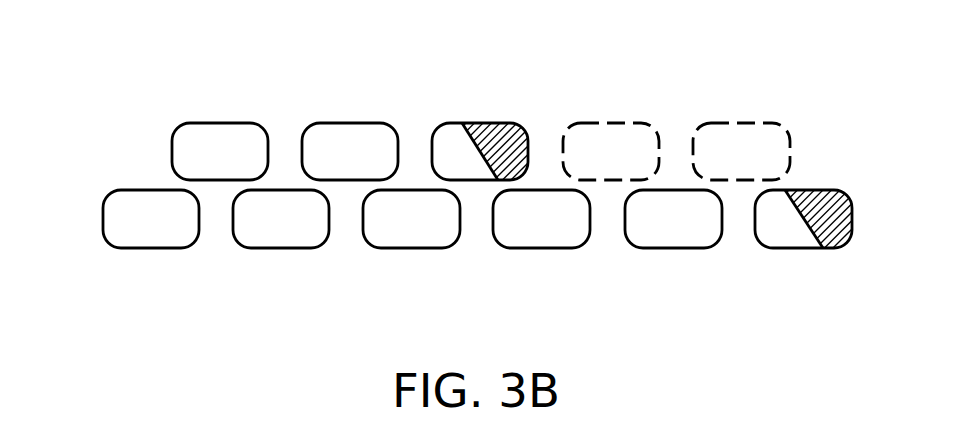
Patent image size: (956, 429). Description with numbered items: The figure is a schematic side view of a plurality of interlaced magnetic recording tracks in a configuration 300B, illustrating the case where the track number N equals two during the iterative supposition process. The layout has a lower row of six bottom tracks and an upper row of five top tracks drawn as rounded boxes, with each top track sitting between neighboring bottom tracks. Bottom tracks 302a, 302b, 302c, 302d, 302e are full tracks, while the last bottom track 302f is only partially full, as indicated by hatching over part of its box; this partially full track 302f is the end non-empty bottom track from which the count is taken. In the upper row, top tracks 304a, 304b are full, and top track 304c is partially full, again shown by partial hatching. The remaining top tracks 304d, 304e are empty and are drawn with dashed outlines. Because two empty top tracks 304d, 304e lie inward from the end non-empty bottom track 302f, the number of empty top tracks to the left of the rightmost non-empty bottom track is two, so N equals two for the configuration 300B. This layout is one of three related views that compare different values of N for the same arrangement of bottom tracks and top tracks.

The configuration 300B is at (126, 56).
The bottom track 302a is at (123, 248).
The bottom track 302b is at (260, 248).
The bottom track 302c is at (390, 248).
The bottom track 302d is at (517, 248).
The bottom track 302e is at (653, 248).
The bottom track 302f is at (775, 248).
The top track 304a is at (222, 123).
The top track 304b is at (335, 123).
The top track 304c is at (488, 123).
The top track 304d is at (592, 123).
The top track 304e is at (725, 123).